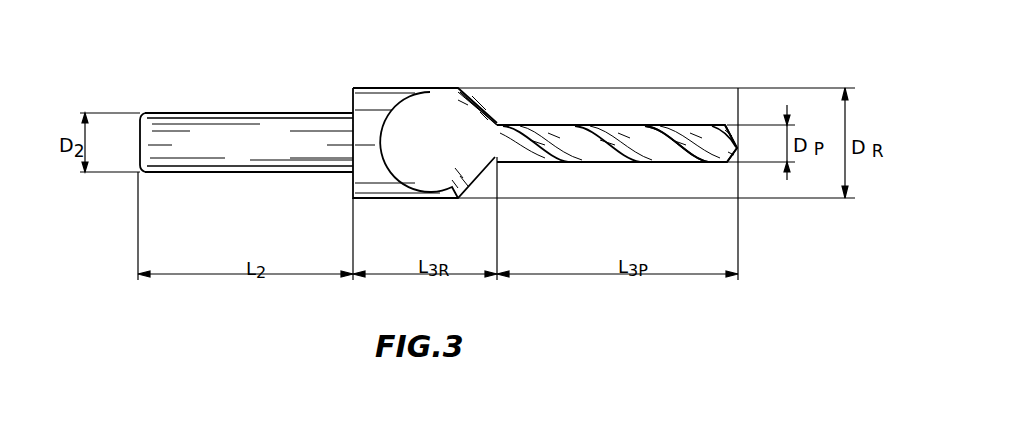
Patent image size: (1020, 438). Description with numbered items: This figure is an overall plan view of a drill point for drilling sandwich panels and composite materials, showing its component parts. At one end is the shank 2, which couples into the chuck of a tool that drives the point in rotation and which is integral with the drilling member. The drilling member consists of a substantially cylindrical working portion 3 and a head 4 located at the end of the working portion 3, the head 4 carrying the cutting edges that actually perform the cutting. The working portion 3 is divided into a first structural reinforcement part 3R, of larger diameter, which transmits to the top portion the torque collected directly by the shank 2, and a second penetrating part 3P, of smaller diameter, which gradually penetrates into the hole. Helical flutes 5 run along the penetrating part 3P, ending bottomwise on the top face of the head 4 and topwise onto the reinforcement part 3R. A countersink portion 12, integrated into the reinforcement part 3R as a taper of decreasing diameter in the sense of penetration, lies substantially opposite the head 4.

The shank 2 is at (240, 113).
The working portion 3 is at (571, 92).
The first structural reinforcement part 3R is at (392, 88).
The second penetrating part 3P is at (643, 163).
The head 4 is at (737, 122).
The helical flutes 5 is at (647, 125).
The countersink portion 12 is at (473, 97).